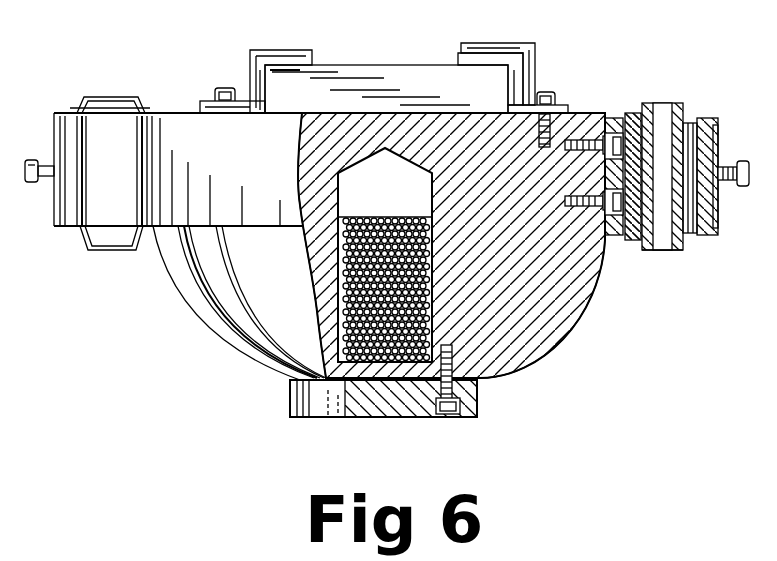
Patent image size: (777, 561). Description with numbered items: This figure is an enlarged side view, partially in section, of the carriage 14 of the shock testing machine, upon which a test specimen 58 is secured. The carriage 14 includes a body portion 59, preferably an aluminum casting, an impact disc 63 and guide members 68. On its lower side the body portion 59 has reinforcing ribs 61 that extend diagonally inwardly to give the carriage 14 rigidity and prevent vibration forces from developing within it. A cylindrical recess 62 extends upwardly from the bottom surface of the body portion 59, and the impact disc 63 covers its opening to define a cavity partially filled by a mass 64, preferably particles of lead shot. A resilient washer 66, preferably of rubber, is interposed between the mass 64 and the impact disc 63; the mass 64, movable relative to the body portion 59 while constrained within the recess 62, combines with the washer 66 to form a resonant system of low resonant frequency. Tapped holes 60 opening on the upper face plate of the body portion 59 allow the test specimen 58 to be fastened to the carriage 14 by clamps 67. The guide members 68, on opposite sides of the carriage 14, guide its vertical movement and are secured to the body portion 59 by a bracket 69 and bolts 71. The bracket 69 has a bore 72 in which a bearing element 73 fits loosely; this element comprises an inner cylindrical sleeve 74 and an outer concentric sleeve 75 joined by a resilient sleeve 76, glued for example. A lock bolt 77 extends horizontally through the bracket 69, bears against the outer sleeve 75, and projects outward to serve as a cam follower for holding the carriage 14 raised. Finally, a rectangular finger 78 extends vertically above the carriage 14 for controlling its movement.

The carriage 14 is at (162, 290).
The test specimen 58 is at (352, 65).
The body portion 59 is at (188, 113).
The tapped holes 60 is at (552, 128).
The reinforcing ribs 61 is at (210, 336).
The cylindrical recess 62 is at (384, 203).
The impact disc 63 is at (290, 410).
The mass 64 is at (446, 345).
The resilient washer 66 is at (322, 364).
The clamps 67 is at (254, 52).
The guide members 68 is at (88, 222).
The bracket 69 is at (712, 218).
The bolts 71 is at (580, 208).
The bore 72 is at (617, 237).
The bearing element 73 is at (668, 103).
The inner cylindrical sleeve 74 is at (676, 251).
The outer concentric sleeve 75 is at (695, 236).
The resilient sleeve 76 is at (704, 119).
The lock bolt 77 is at (732, 186).
The rectangular finger 78 is at (505, 43).